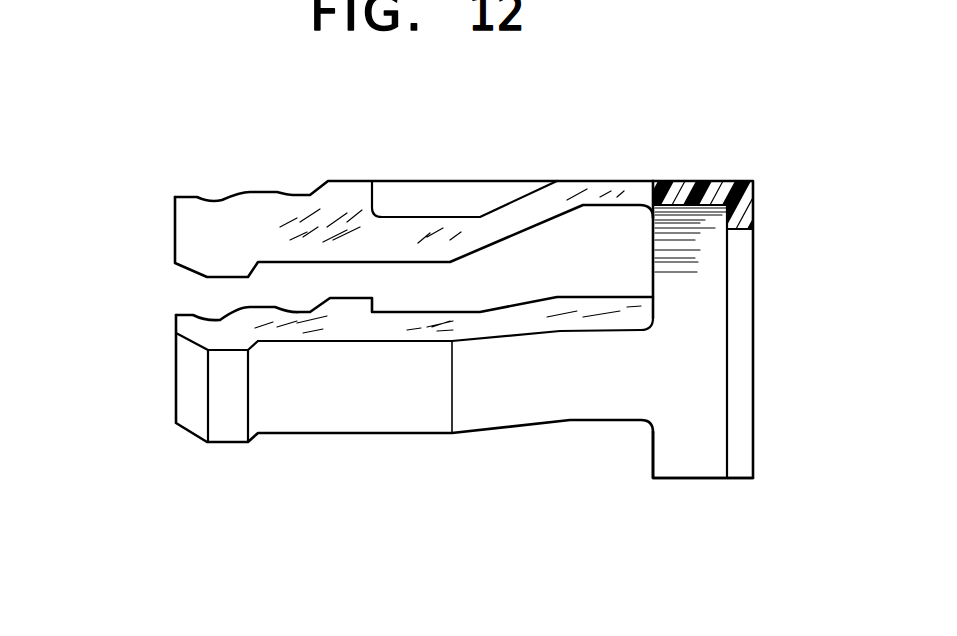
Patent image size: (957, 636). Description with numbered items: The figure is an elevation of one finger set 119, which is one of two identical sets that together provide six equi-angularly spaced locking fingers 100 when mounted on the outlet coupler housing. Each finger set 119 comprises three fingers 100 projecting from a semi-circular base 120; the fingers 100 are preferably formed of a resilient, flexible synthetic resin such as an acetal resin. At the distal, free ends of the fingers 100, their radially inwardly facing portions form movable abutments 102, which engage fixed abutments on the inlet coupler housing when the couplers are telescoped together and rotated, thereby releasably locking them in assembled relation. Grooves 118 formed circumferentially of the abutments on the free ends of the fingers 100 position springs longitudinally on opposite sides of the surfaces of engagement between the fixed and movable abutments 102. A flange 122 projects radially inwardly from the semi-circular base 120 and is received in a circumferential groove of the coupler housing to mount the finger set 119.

The fingers 100 is at (344, 316).
The movable abutments 102 is at (228, 397).
The grooves 118 is at (308, 196).
The finger set 119 is at (683, 85).
The semi-circular base 120 is at (683, 480).
The flange 122 is at (730, 209).